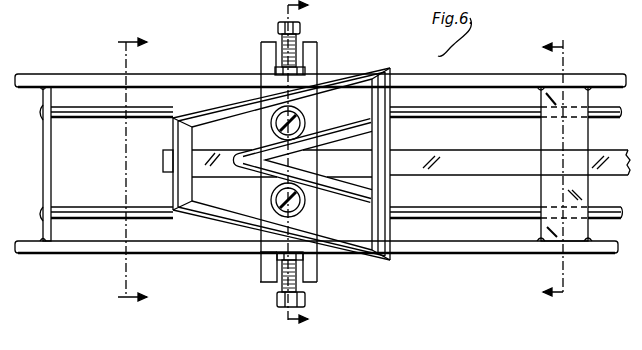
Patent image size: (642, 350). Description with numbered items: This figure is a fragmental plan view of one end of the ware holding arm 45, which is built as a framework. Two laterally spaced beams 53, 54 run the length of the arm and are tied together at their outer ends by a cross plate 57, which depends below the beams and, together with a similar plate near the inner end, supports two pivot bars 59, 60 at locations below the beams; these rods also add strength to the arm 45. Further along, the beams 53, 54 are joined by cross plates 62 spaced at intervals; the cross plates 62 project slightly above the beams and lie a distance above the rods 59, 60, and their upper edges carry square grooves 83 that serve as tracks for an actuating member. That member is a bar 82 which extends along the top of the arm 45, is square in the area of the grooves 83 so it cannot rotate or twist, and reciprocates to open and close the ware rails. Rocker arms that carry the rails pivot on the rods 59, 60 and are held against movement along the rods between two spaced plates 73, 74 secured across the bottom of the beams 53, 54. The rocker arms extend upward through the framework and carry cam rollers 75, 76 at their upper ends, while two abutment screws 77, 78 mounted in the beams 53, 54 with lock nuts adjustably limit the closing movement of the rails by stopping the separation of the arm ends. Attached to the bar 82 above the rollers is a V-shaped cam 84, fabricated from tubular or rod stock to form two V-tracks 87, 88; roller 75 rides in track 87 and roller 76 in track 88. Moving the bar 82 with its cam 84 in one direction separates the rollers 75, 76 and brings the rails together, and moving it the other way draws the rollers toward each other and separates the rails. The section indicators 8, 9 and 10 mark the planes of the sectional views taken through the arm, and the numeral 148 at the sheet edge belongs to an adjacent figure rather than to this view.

The section line 8- 8 is at (123, 171).
The section line 9- 9 is at (284, 166).
The section line 10- 10 is at (569, 174).
The ware holding arm 45 is at (108, 254).
The beam 53 is at (489, 82).
The beam 54 is at (475, 247).
The cross plate 57 is at (43, 177).
The pivot bar 59 is at (86, 108).
The pivot bar 60 is at (97, 216).
The cross plate 62 is at (573, 97).
The plate 73 is at (314, 50).
The plate 74 is at (268, 50).
The cam roller 75 is at (272, 113).
The cam roller 76 is at (272, 210).
The abutment screw 77 is at (278, 25).
The abutment screw 78 is at (285, 287).
The bar 82 is at (470, 162).
The square groove 83 is at (571, 153).
The V-shaped cam 84 is at (173, 133).
The V-track 87 is at (356, 96).
The V-track 88 is at (356, 223).
The reference from adjacent figure 148 is at (17, 17).